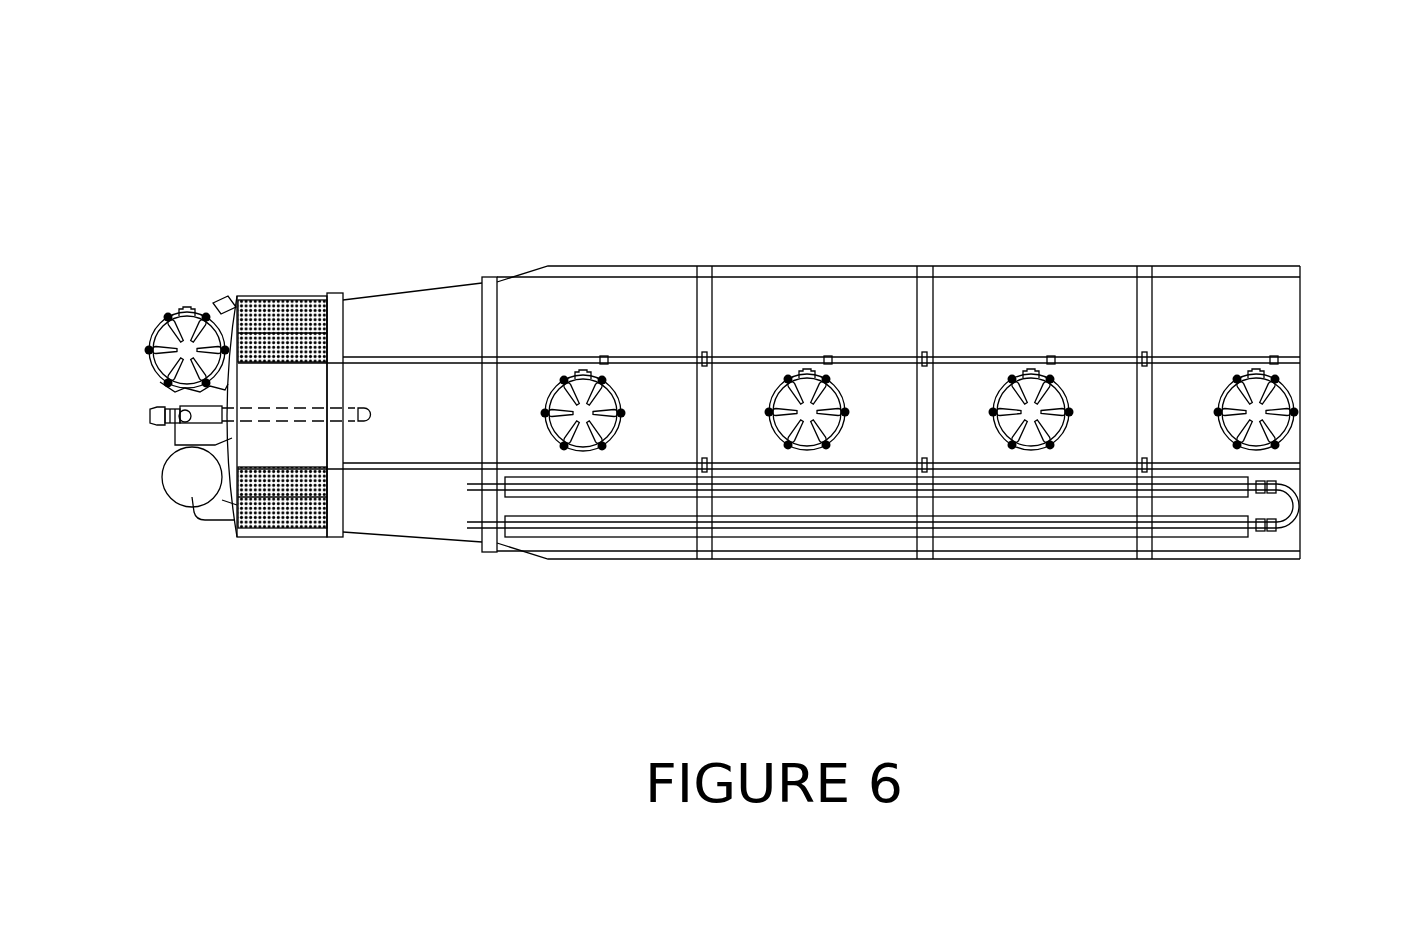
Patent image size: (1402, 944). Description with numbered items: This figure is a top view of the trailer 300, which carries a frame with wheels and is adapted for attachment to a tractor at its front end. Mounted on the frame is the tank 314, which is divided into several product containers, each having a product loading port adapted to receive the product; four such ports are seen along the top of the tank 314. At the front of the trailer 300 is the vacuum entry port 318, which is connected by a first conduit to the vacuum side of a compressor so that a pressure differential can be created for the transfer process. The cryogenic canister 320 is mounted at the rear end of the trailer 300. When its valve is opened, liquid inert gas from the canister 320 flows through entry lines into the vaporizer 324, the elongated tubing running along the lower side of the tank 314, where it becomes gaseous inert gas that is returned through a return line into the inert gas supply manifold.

The trailer 300 is at (761, 306).
The tank 314 is at (1130, 262).
The vacuum entry port 318 is at (142, 420).
The cryogenic canister 320 is at (178, 512).
The vaporizer 324 is at (1292, 482).